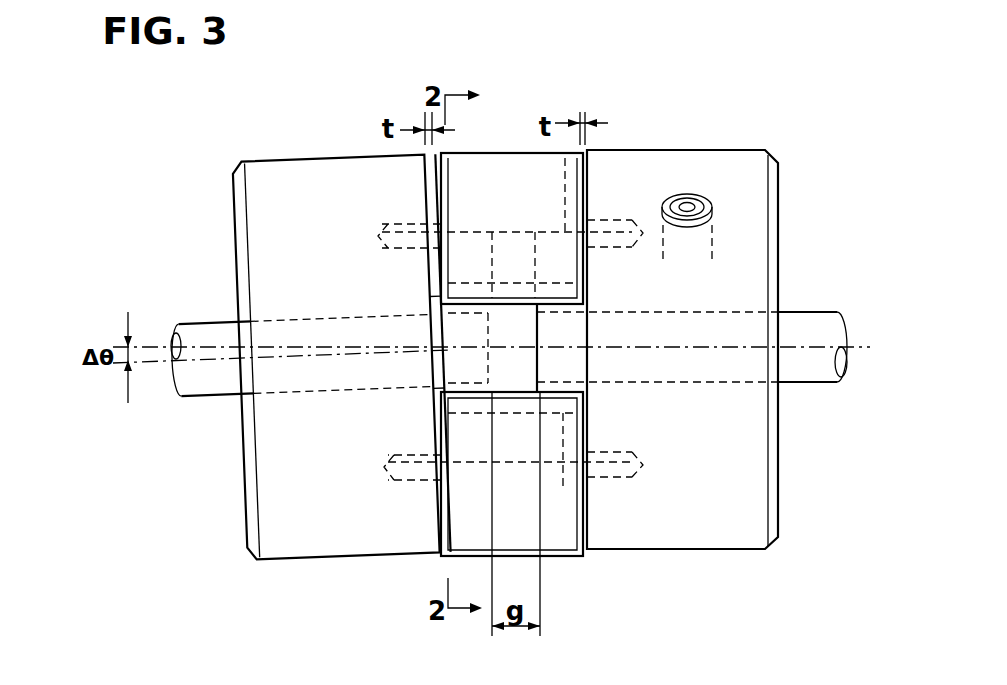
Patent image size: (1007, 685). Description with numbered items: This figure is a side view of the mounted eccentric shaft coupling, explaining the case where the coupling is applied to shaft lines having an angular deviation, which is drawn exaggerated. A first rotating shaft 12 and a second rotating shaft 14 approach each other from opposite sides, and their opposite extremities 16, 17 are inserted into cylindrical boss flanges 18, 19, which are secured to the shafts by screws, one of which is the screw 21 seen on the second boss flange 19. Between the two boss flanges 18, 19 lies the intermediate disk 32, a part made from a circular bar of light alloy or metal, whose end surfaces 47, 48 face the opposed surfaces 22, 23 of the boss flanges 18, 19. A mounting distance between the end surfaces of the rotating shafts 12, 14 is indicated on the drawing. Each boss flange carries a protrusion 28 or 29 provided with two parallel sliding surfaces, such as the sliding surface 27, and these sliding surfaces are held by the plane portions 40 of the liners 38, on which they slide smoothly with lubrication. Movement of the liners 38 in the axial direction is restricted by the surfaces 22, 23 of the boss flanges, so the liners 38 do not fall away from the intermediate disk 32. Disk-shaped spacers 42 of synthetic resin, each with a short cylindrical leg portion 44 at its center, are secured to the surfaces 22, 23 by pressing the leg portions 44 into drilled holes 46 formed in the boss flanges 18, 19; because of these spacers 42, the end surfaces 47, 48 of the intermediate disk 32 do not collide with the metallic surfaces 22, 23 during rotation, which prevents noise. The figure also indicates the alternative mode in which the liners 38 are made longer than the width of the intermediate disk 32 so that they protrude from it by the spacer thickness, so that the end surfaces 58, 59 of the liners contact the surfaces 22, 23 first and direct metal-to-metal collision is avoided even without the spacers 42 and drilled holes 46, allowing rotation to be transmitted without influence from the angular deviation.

The first rotating shaft 12 is at (200, 323).
The second rotating shaft 14 is at (790, 312).
The extremity of the first rotating shaft 16 is at (433, 410).
The extremity of the second rotating shaft 17 is at (592, 287).
The boss flange 18 is at (297, 562).
The boss flange 19 is at (742, 150).
The screw 21 is at (703, 198).
The surface of the boss flange 22 is at (465, 235).
The surface of the boss flange 23 is at (575, 273).
The sliding surface 27 is at (515, 297).
The protrusion 28 is at (538, 150).
The protrusion 29 is at (433, 363).
The intermediate disk 32 is at (568, 553).
The liner 38 is at (548, 280).
The plane portion of the liner 40 is at (435, 322).
The spacer 42 is at (430, 285).
The leg portion 44 is at (400, 223).
The drilled hole 46 is at (377, 227).
The end surface of the intermediate disk 47 is at (437, 217).
The end surface of the intermediate disk 48 is at (588, 425).
The end surface of the liner 58 is at (425, 298).
The end surface of the liner 59 is at (588, 303).